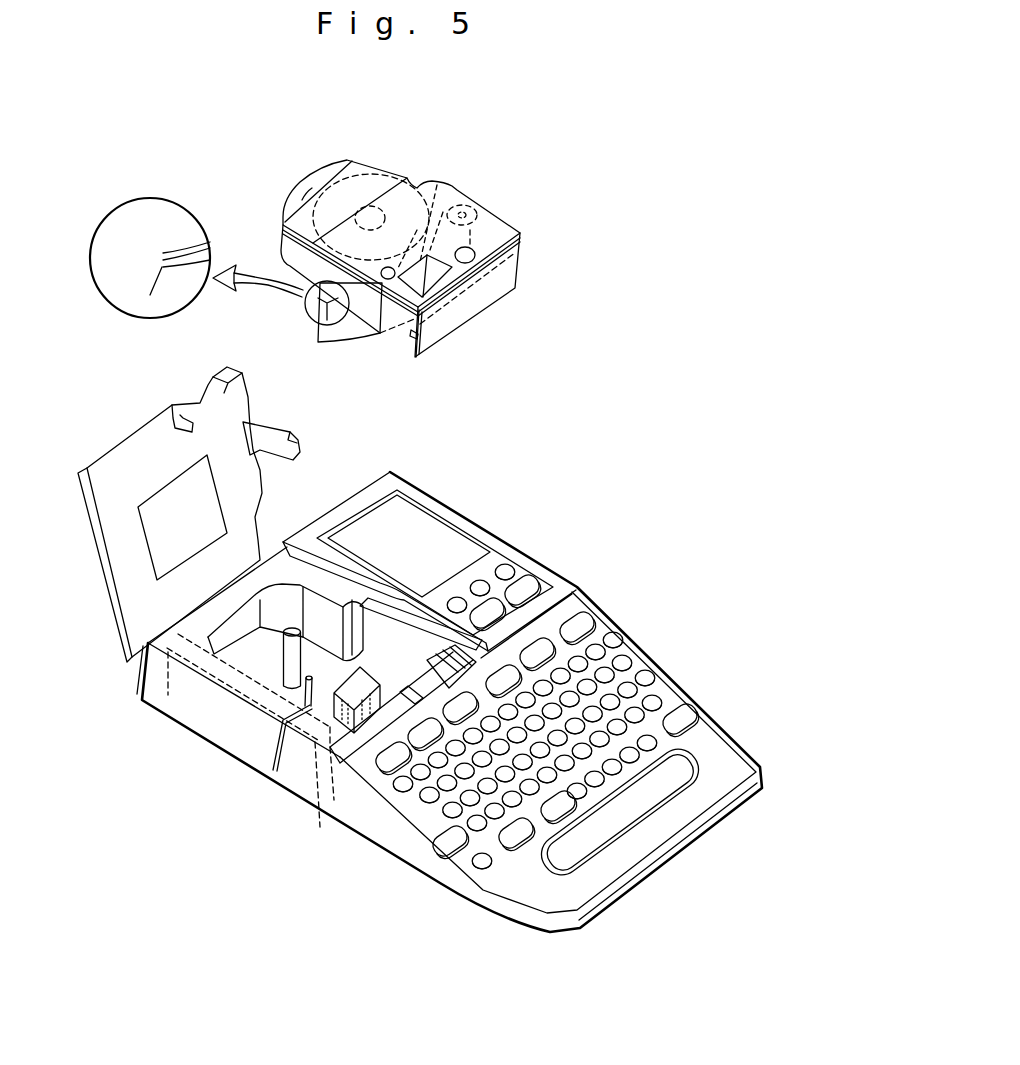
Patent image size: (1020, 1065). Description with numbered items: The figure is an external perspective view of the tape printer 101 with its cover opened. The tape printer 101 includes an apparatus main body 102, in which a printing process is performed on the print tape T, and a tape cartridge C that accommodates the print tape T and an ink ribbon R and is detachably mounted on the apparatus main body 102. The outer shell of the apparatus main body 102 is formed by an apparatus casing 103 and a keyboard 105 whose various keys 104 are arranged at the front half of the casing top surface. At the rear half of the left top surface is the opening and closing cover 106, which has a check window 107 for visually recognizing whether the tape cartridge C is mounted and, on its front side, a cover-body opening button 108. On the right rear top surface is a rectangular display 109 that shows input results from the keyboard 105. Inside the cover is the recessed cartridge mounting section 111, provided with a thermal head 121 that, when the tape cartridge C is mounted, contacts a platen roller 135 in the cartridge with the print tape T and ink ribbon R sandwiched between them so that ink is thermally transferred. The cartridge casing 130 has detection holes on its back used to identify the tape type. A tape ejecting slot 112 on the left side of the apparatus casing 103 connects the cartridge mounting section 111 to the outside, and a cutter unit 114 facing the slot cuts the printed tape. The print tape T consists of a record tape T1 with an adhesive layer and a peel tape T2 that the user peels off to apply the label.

The tape printer 101 is at (583, 131).
The apparatus main body 102 is at (561, 574).
The apparatus casing 103 is at (390, 477).
The keys 104 is at (646, 677).
The keyboard 105 is at (659, 703).
The opening and closing cover 106 is at (115, 547).
The check window 107 is at (170, 545).
The cover-body opening button 108 is at (437, 688).
The display 109 is at (452, 542).
The cartridge mounting section 111 is at (338, 596).
The tape ejecting slot 112 is at (275, 765).
The cutter unit 114 is at (145, 703).
The thermal head 121 is at (320, 812).
The cartridge casing 130 is at (373, 144).
The platen roller 135 is at (302, 200).
The tape cartridge C is at (387, 167).
The ink ribbon R is at (445, 210).
The print tape T is at (352, 322).
The record tape T1 is at (163, 260).
The peel tape T2 is at (163, 255).